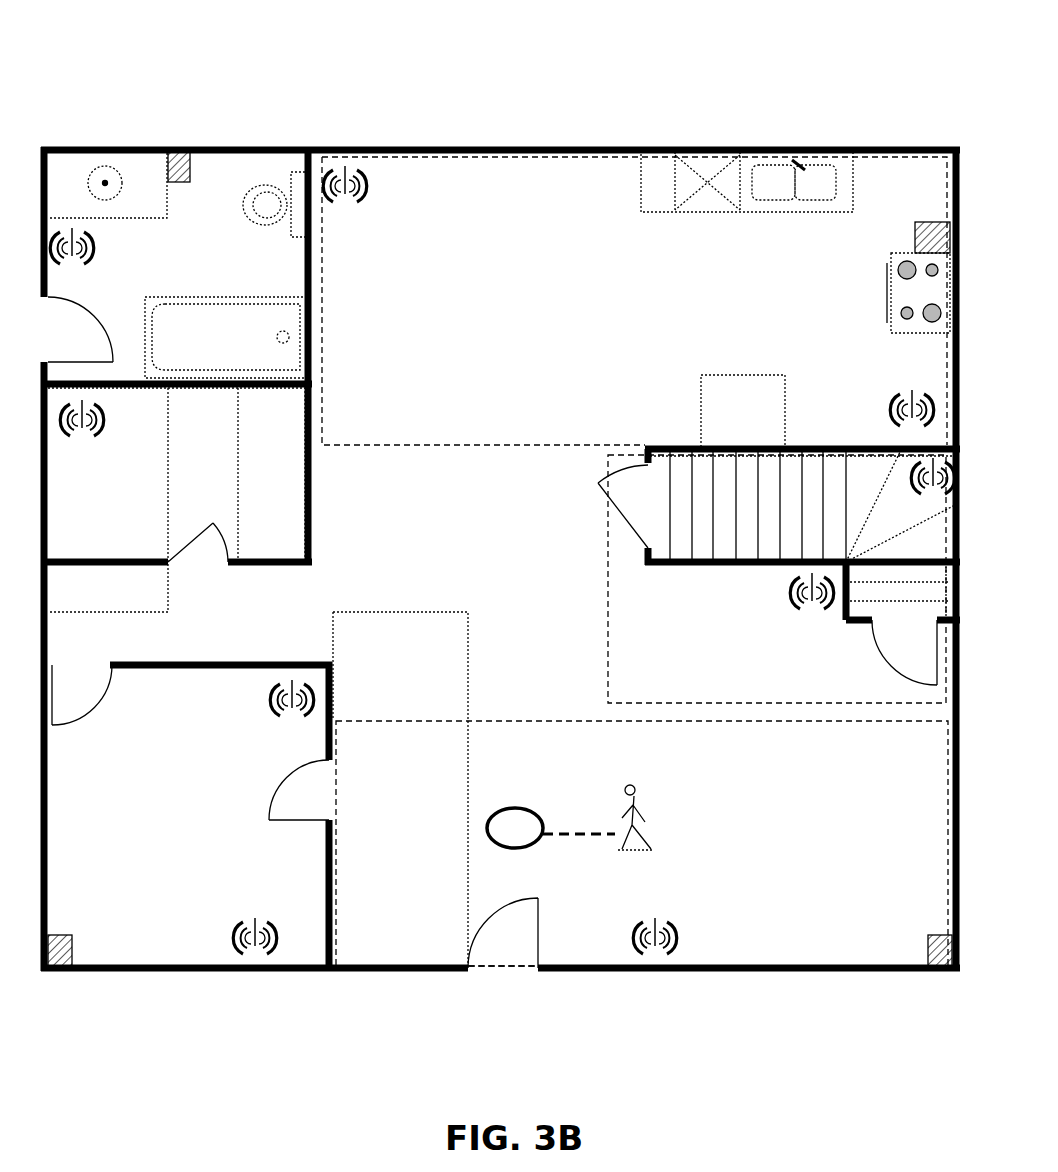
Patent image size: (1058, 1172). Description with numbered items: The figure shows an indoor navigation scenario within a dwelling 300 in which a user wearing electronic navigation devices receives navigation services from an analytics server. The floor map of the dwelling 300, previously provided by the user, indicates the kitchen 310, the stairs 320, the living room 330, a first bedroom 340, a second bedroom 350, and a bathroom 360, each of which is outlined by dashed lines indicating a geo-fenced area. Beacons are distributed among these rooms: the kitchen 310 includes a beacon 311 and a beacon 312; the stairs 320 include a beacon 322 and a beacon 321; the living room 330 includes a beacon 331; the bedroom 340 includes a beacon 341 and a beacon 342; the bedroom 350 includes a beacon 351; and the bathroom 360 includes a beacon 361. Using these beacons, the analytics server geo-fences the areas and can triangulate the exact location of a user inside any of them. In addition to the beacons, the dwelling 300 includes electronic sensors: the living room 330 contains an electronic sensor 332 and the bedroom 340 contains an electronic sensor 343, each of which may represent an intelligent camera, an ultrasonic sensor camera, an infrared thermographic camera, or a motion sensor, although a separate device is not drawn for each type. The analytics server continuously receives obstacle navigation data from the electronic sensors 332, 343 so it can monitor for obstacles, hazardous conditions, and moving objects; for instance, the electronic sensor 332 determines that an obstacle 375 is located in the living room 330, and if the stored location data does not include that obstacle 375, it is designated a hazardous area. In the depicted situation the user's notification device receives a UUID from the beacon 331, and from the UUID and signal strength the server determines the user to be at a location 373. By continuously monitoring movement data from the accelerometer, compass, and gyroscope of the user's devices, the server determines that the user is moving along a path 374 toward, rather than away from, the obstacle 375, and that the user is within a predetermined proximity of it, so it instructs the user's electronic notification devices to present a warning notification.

The dwelling 300 is at (812, 60).
The kitchen 310 is at (636, 299).
The beacon 311 is at (380, 207).
The beacon 312 is at (873, 395).
The stairs 320 is at (779, 576).
The beacon 321 is at (813, 614).
The beacon 322 is at (898, 496).
The living room 330 is at (642, 843).
The beacon 331 is at (653, 917).
The electronic sensor 332 is at (932, 932).
The bedroom 340 is at (260, 791).
The beacon 341 is at (260, 714).
The beacon 342 is at (233, 919).
The electronic sensor 343 is at (62, 932).
The bedroom 350 is at (176, 500).
The beacon 351 is at (135, 418).
The bathroom 360 is at (176, 356).
The beacon 361 is at (121, 246).
The location 373 is at (677, 807).
The path 374 is at (577, 826).
The obstacle 375 is at (486, 841).